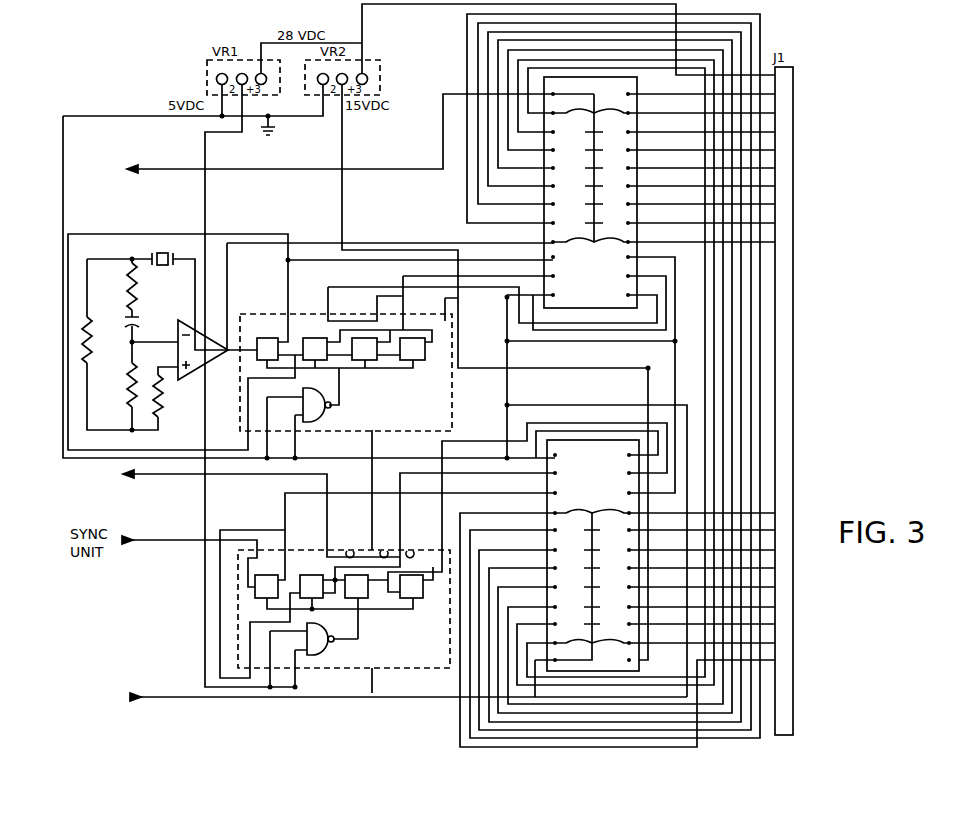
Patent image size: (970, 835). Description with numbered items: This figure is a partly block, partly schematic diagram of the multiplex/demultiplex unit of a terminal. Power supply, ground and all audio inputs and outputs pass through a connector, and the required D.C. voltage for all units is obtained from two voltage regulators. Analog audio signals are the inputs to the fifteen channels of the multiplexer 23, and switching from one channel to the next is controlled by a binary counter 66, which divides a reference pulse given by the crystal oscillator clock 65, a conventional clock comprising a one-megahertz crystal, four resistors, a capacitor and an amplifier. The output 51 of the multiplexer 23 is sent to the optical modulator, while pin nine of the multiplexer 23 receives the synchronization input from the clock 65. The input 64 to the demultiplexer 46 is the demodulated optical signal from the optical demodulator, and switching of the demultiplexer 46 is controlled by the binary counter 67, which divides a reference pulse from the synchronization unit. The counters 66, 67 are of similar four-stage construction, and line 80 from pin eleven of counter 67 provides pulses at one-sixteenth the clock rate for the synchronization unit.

The multiplexer 23 is at (656, 80).
The demultiplexer 46 is at (641, 668).
The output of the multiplexer 51 is at (421, 171).
The input to the demultiplexer 64 is at (197, 695).
The crystal oscillator clock 65 is at (181, 342).
The binary counter 66 is at (452, 420).
The binary counter 67 is at (416, 672).
The line 80 is at (196, 477).